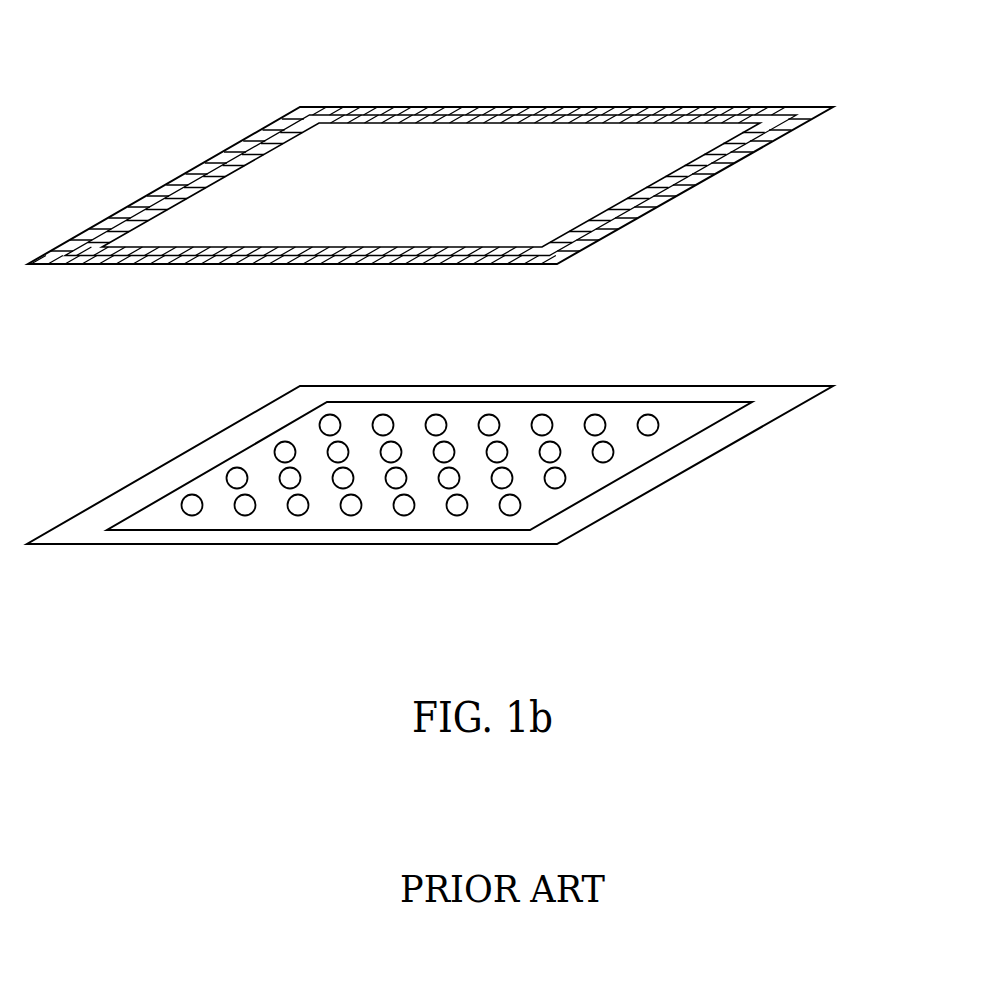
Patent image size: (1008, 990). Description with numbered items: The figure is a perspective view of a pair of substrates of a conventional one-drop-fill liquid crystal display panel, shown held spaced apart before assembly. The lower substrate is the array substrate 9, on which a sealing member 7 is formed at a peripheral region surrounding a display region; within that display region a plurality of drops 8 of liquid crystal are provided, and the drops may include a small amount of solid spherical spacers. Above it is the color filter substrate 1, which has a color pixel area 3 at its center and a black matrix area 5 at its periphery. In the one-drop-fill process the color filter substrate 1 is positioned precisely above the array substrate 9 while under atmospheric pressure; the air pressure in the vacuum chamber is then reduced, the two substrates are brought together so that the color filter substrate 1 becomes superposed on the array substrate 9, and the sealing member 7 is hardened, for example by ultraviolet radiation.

The color filter substrate 1 is at (660, 107).
The color pixel area 3 is at (643, 155).
The black matrix area 5 is at (607, 237).
The sealing member 7 is at (690, 438).
The drops of liquid crystal 8 is at (330, 427).
The array substrate 9 is at (640, 498).